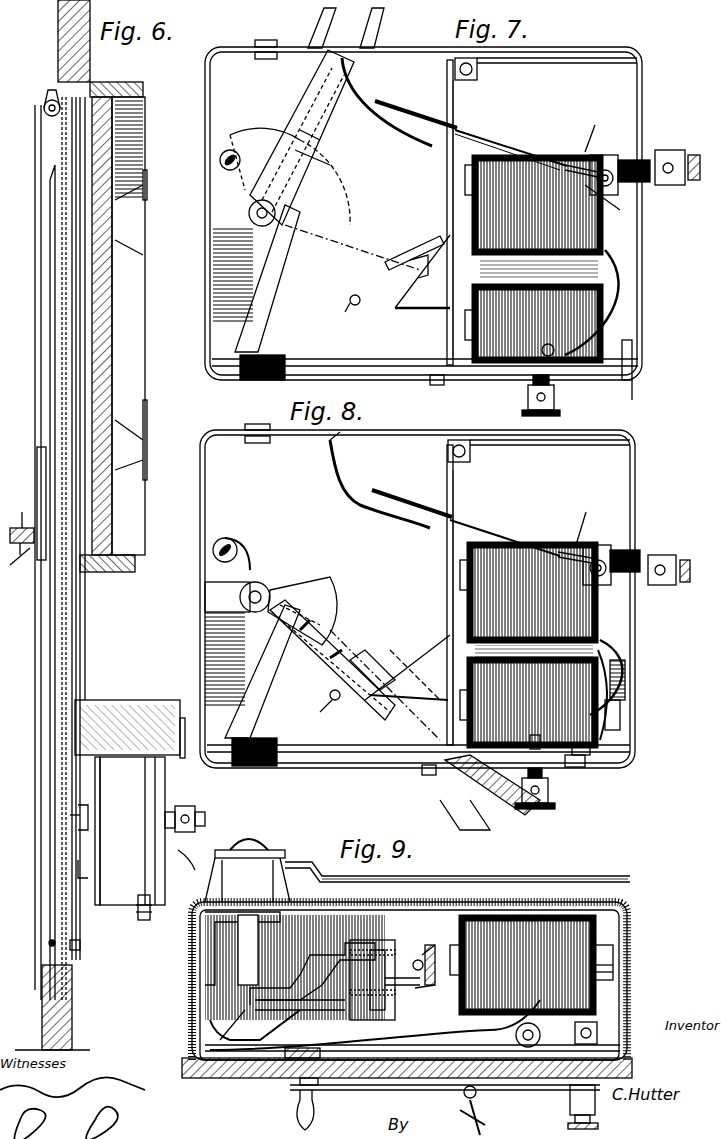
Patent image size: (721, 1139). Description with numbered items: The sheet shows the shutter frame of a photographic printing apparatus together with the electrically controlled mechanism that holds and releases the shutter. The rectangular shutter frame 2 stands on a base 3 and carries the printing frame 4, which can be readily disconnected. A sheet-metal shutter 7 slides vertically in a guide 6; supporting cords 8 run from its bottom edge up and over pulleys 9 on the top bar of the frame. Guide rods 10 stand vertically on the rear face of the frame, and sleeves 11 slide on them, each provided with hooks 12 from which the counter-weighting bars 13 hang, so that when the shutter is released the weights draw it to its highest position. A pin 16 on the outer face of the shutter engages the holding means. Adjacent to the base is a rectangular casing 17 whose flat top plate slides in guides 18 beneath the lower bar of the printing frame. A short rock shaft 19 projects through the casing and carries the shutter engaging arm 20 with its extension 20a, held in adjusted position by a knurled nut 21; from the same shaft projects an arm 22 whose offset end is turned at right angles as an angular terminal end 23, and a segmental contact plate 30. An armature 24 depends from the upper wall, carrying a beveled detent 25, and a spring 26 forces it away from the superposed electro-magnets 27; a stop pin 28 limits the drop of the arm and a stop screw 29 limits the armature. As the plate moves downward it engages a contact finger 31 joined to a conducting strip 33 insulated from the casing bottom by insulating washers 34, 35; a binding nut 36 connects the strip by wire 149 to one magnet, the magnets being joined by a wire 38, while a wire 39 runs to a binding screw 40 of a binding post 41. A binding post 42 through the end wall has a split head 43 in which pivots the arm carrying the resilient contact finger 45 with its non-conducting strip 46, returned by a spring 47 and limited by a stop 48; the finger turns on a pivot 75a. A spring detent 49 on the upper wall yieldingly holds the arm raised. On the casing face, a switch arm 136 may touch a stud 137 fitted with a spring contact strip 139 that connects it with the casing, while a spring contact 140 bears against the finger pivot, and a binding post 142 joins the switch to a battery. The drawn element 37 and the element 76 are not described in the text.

In FIG. 6, the shutter frame 2 is at (58, 62).
In FIG. 6, the base 3 is at (72, 1050).
In FIG. 6, the printing frame 4 is at (135, 152).
In FIG. 6, the guide 6 is at (70, 615).
In FIG. 6, the shutter 7 is at (70, 648).
In FIG. 6, the supporting cords 8 is at (36, 148).
In FIG. 6, the pulleys 9 is at (44, 108).
In FIG. 6, the guide rods 10 is at (47, 256).
In FIG. 6, the sleeves 11 is at (38, 490).
In FIG. 6, the hooks 12 is at (16, 563).
In FIG. 6, the counter-weighting bars 13 is at (17, 527).
In FIG. 6, the pin 16 is at (83, 869).
In FIG. 6, the casing 17 is at (130, 831).
In FIG. 7, the casing 17 is at (625, 108).
In FIG. 8, the casing 17 is at (625, 525).
In FIG. 9, the casing 17 is at (627, 930).
In FIG. 6, the guides 18 is at (120, 755).
In FIG. 7, the rock shaft 19 is at (278, 230).
In FIG. 8, the rock shaft 19 is at (268, 585).
In FIG. 9, the rock shaft 19 is at (250, 955).
In FIG. 6, the shutter engaging arm 20 is at (80, 945).
In FIG. 7, the shutter engaging arm 20 is at (375, 25).
In FIG. 8, the shutter engaging arm 20 is at (490, 792).
In FIG. 9, the shutter engaging arm 20 is at (590, 877).
In FIG. 7, the shutter engaging arm extension 20a is at (316, 32).
In FIG. 9, the shutter engaging arm extension 20a is at (457, 858).
In FIG. 6, the knurled nut 21 is at (78, 816).
In FIG. 9, the knurled nut 21 is at (255, 852).
In FIG. 7, the arm 22 is at (320, 176).
In FIG. 8, the arm 22 is at (340, 640).
In FIG. 9, the arm 22 is at (300, 978).
In FIG. 7, the angular terminal end 23 is at (420, 255).
In FIG. 8, the angular terminal end 23 is at (385, 705).
In FIG. 9, the angular terminal end 23 is at (425, 950).
In FIG. 7, the armature 24 is at (447, 152).
In FIG. 8, the armature 24 is at (452, 490).
In FIG. 7, the detent 25 is at (420, 300).
In FIG. 8, the detent 25 is at (420, 680).
In FIG. 9, the detent 25 is at (410, 988).
In FIG. 7, the spring 26 is at (470, 100).
In FIG. 8, the spring 26 is at (490, 452).
In FIG. 7, the electro-magnets 27 is at (532, 259).
In FIG. 8, the electro-magnets 27 is at (527, 645).
In FIG. 9, the electro-magnets 27 is at (520, 940).
In FIG. 7, the stop pin 28 is at (341, 312).
In FIG. 8, the stop pin 28 is at (329, 708).
In FIG. 7, the stop screw 29 is at (444, 386).
In FIG. 8, the stop screw 29 is at (425, 784).
In FIG. 9, the stop screw 29 is at (428, 944).
In FIG. 7, the segmental contact plate 30 is at (255, 135).
In FIG. 8, the segmental contact plate 30 is at (330, 590).
In FIG. 9, the segmental contact plate 30 is at (367, 980).
In FIG. 7, the contact finger 31 is at (258, 310).
In FIG. 8, the contact finger 31 is at (258, 685).
In FIG. 9, the contact finger 31 is at (268, 1028).
In FIG. 7, the conducting strip 33 is at (350, 359).
In FIG. 8, the conducting strip 33 is at (390, 752).
In FIG. 9, the conducting strip 33 is at (412, 1042).
In FIG. 7, the insulating washer 34 is at (256, 380).
In FIG. 8, the insulating washer 34 is at (280, 755).
In FIG. 7, the insulating washer 35 is at (625, 380).
In FIG. 8, the insulating washer 35 is at (575, 767).
In FIG. 7, the binding nut 36 is at (617, 398).
In FIG. 8, the binding nut 36 is at (592, 750).
In FIG. 9, the binding nut 36 is at (600, 1033).
In FIG. 8, the contact 37 is at (620, 690).
In FIG. 8, the wire 38 is at (610, 652).
In FIG. 7, the wire 39 is at (628, 285).
In FIG. 8, the wire 39 is at (600, 620).
In FIG. 7, the binding screw 40 is at (547, 340).
In FIG. 8, the binding screw 40 is at (525, 728).
In FIG. 7, the binding post 41 is at (554, 405).
In FIG. 8, the binding post 41 is at (550, 800).
In FIG. 7, the binding post 42 is at (672, 162).
In FIG. 8, the binding post 42 is at (660, 557).
In FIG. 7, the split head 43 is at (598, 160).
In FIG. 8, the split head 43 is at (588, 550).
In FIG. 7, the resilient contact finger 45 is at (510, 152).
In FIG. 8, the resilient contact finger 45 is at (478, 532).
In FIG. 7, the non-conducting strip 46 is at (430, 118).
In FIG. 8, the non-conducting strip 46 is at (432, 510).
In FIG. 7, the spring 47 is at (578, 162).
In FIG. 8, the spring 47 is at (556, 548).
In FIG. 7, the stop 48 is at (597, 130).
In FIG. 8, the stop 48 is at (587, 521).
In FIG. 7, the spring detent 49 is at (378, 108).
In FIG. 8, the spring detent 49 is at (370, 488).
In FIG. 7, the pivot 75a is at (625, 210).
In FIG. 6, the screw 76 is at (83, 868).
In FIG. 6, the switch arm 136 is at (192, 853).
In FIG. 9, the switch arm 136 is at (465, 1098).
In FIG. 9, the stud 137 is at (295, 1085).
In FIG. 9, the spring contact strip 139 is at (225, 1078).
In FIG. 9, the spring contact 140 is at (505, 1060).
In FIG. 6, the binding post 142 is at (200, 802).
In FIG. 9, the binding post 142 is at (572, 1112).
In FIG. 8, the wire 149 is at (640, 720).